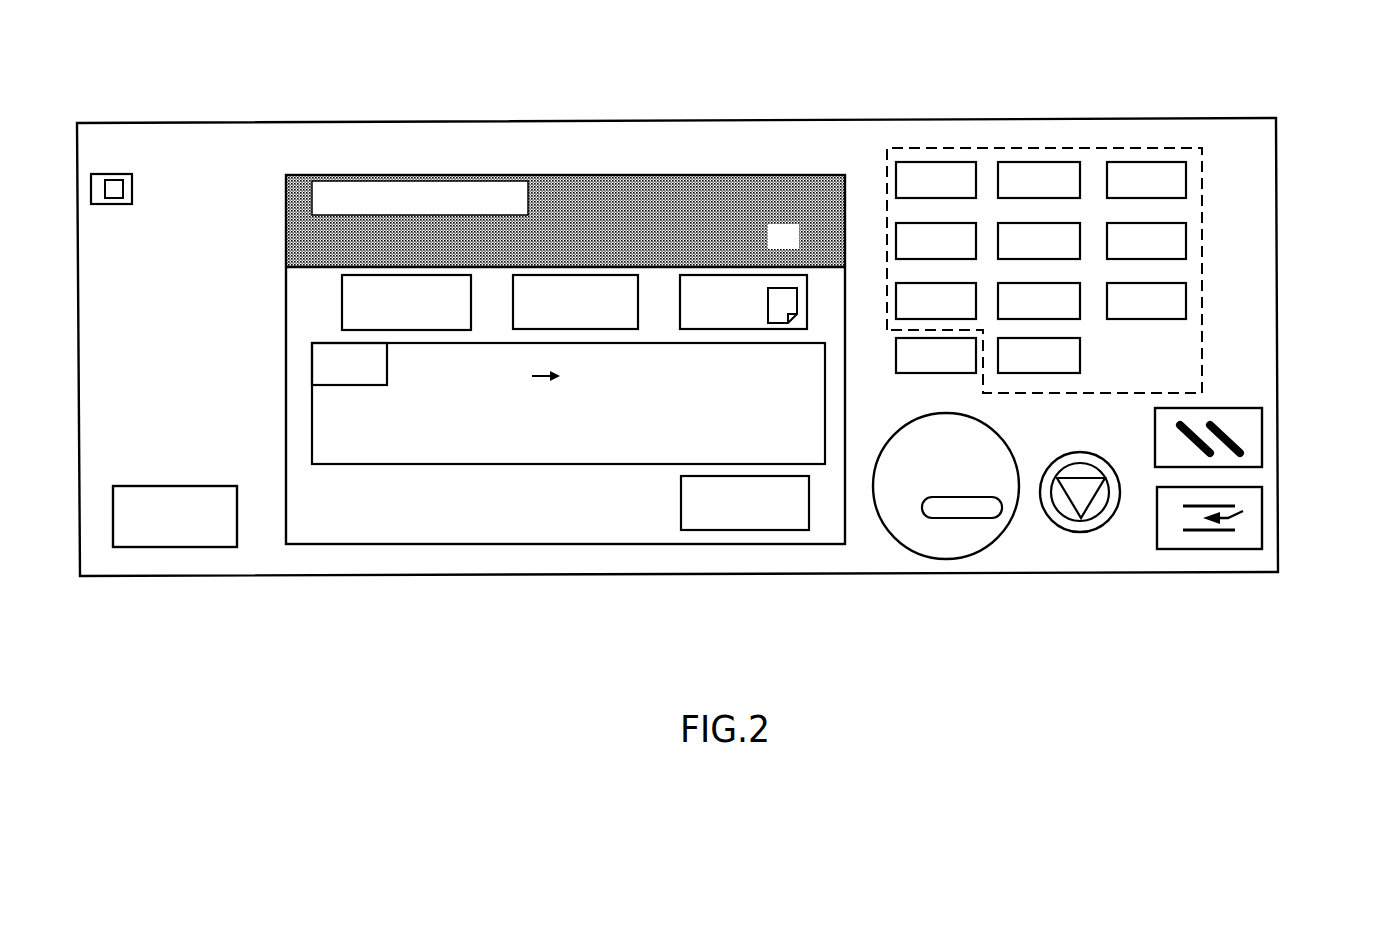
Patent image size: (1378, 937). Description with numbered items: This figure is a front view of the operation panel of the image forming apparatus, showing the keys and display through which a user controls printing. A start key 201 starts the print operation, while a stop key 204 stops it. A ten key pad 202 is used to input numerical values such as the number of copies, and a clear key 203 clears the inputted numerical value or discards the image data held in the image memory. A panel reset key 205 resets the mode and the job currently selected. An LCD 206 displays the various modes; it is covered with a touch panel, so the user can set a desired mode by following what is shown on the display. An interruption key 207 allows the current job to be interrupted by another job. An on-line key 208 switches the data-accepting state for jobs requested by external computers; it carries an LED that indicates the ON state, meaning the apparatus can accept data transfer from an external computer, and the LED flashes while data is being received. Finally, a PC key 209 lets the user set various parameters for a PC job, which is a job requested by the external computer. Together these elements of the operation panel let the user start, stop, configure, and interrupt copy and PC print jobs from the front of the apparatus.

The start key 201 is at (949, 559).
The ten key pad 202 is at (1036, 147).
The clear key 203 is at (898, 366).
The stop key 204 is at (1077, 532).
The panel reset key 205 is at (1262, 437).
The LCD 206 is at (463, 175).
The interruption key 207 is at (1262, 518).
The on-line key 208 is at (110, 174).
The PC key 209 is at (175, 548).